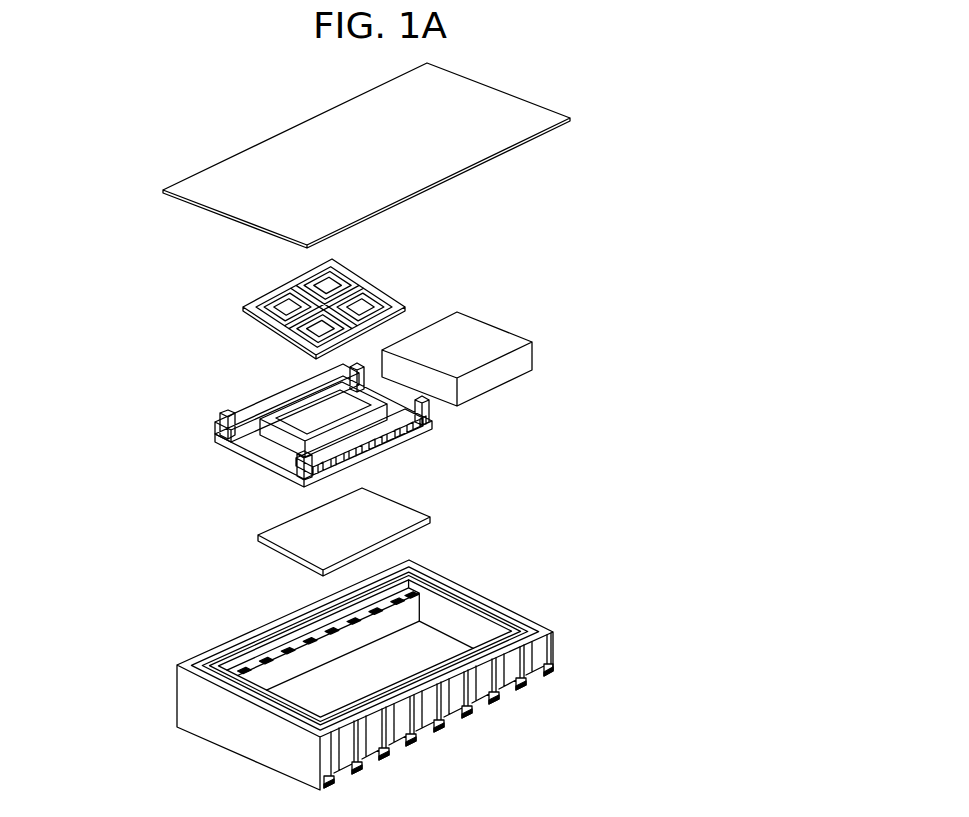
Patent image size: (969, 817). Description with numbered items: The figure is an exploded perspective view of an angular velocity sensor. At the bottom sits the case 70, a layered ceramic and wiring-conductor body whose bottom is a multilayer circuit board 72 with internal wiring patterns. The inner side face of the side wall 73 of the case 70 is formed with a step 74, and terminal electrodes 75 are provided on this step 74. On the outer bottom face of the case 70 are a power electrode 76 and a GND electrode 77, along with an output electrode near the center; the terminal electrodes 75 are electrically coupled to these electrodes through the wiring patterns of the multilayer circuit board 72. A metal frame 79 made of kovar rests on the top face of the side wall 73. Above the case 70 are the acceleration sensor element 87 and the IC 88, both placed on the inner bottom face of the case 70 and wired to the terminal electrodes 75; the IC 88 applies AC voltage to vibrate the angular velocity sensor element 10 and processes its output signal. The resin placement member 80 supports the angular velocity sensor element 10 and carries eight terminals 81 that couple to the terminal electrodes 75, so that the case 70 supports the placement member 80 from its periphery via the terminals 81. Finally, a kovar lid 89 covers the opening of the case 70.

The angular velocity sensor element 10 is at (290, 297).
The case 70 is at (378, 623).
The multilayer circuit board 72 is at (428, 635).
The side wall 73 is at (407, 617).
The step 74 is at (247, 660).
The terminal electrodes 75 is at (315, 633).
The power electrode 76 is at (547, 692).
The GND electrode 77 is at (523, 712).
The metal frame 79 is at (533, 632).
The placement member 80 is at (375, 415).
The terminals 81 is at (215, 418).
The acceleration sensor element 87 is at (507, 343).
The IC 88 is at (290, 538).
The lid 89 is at (237, 180).